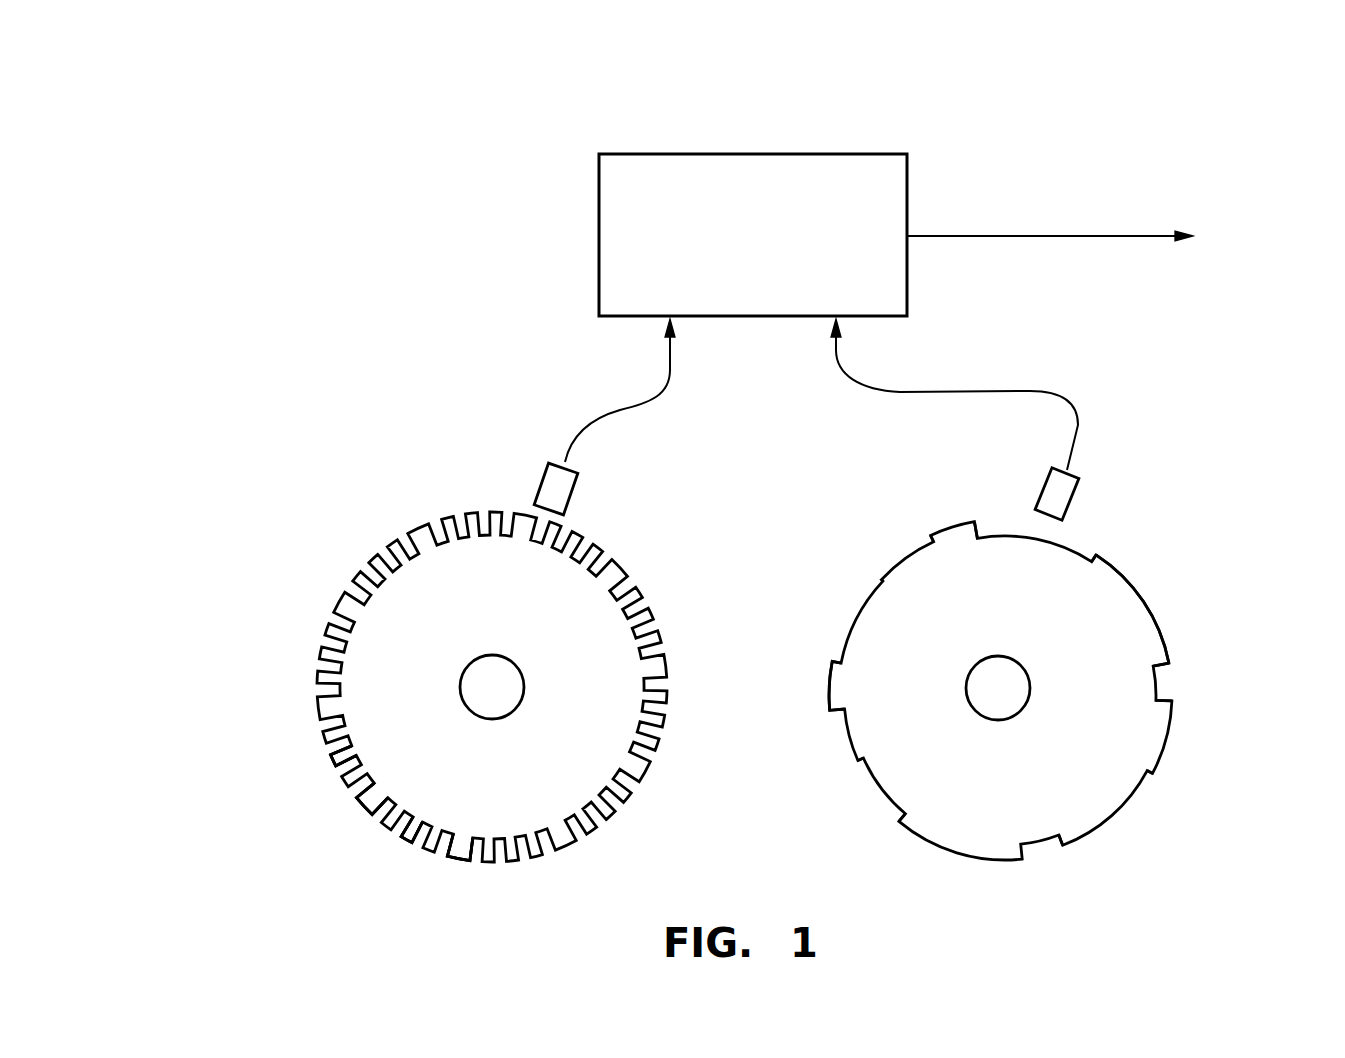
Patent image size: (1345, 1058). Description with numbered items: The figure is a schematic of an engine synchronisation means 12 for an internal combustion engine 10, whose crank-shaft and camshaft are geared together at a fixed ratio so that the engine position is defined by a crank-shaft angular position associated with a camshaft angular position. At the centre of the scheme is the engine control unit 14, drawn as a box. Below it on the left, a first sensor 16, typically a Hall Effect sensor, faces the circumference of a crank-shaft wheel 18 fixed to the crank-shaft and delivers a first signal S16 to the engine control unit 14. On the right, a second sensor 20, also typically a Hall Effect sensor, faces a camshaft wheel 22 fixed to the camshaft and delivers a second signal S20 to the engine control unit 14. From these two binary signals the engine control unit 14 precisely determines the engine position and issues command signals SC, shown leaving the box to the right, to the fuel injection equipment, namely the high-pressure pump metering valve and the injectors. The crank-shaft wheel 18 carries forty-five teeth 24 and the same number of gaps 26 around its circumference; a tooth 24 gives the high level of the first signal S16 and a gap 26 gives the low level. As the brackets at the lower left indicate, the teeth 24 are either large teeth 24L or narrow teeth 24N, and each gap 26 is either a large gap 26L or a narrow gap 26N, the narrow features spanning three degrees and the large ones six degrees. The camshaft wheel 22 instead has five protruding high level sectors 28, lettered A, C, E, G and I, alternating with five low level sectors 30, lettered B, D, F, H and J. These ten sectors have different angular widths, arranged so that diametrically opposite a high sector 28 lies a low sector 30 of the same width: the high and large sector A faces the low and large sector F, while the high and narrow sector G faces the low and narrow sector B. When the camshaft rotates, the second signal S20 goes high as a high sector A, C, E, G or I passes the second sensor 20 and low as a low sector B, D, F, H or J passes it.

The internal combustion engine 10 is at (1222, 95).
The engine synchronisation means 12 is at (1078, 148).
The engine control unit 14 is at (768, 233).
The first sensor 16 is at (550, 473).
The crank-shaft wheel 18 is at (512, 606).
The second sensor 20 is at (1068, 480).
The camshaft wheel 22 is at (1013, 607).
The teeth 24 is at (275, 860).
The narrow teeth 24N is at (412, 837).
The large teeth 24L is at (457, 855).
The gaps 26 is at (212, 755).
The narrow gaps 26N is at (340, 753).
The large gaps 26L is at (373, 797).
The high level sectors 28 is at (1165, 622).
The low level sectors 30 is at (1168, 694).
The first signal S16 is at (637, 407).
The second signal S20 is at (980, 388).
The command signals SC is at (1092, 235).
The high level sector A is at (1103, 556).
The low level sector B is at (1166, 664).
The high level sector C is at (1152, 770).
The low level sector D is at (1042, 842).
The high level sector E is at (932, 849).
The low level sector F is at (858, 762).
The high level sector G is at (828, 685).
The low level sector H is at (880, 580).
The high level sector I is at (943, 523).
The low level sector J is at (1016, 528).